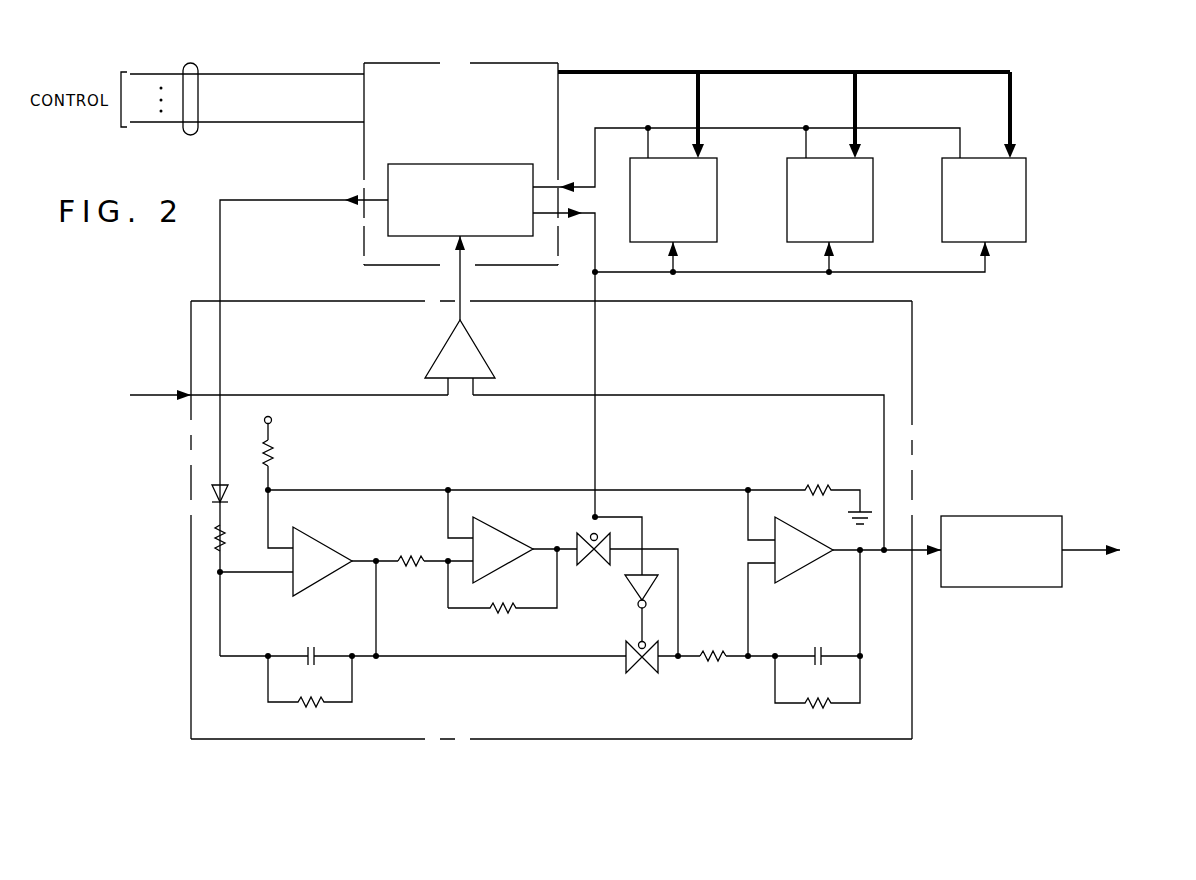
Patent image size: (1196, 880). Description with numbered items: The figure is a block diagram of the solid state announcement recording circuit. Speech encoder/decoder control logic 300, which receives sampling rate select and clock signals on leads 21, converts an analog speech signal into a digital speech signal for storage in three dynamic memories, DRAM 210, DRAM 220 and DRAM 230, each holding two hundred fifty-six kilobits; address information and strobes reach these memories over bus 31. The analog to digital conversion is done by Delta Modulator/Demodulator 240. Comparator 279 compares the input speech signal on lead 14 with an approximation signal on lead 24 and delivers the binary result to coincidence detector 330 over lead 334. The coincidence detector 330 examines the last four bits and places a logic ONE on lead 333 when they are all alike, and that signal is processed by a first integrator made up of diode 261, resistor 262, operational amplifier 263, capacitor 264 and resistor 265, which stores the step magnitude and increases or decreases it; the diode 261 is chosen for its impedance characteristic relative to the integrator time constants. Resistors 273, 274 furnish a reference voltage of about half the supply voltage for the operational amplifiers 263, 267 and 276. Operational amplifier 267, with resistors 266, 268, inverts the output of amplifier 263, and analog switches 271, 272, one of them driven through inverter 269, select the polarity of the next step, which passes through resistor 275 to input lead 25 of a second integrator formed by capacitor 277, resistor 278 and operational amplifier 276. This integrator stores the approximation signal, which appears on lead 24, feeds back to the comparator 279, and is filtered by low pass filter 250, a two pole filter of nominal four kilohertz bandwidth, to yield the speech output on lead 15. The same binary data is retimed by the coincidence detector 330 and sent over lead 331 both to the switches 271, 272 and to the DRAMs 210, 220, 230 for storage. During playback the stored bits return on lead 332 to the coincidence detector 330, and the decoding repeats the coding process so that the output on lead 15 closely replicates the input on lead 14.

The leads 21 is at (190, 63).
The speech encoder/decoder control logic 300 is at (455, 63).
The coincidence detector 330 is at (455, 164).
The lead 333 is at (220, 240).
The lead 334 is at (462, 282).
The bus 31 is at (785, 72).
The lead 332 is at (790, 128).
The lead 331 is at (960, 272).
The DRAM 210 is at (717, 160).
The DRAM 220 is at (873, 160).
The DRAM 230 is at (1026, 160).
The Delta Modulator/Demodulator 240 is at (805, 739).
The lead 14 is at (163, 393).
The lead 24 is at (758, 395).
The comparator 279 is at (473, 357).
The resistor 273 is at (289, 454).
The diode 261 is at (235, 485).
The resistor 262 is at (236, 532).
The operational amplifier 263 is at (307, 561).
The resistor 266 is at (434, 552).
The operational amplifier 267 is at (512, 549).
The resistor 268 is at (502, 581).
The capacitor 264 is at (423, 648).
The resistor 265 is at (310, 681).
The analog switch 271 is at (627, 585).
The inverter 269 is at (626, 579).
The analog switch 272 is at (662, 670).
The resistor 275 is at (734, 646).
The input lead 25 is at (748, 613).
The capacitor 277 is at (817, 648).
The resistor 278 is at (817, 629).
The resistor 274 is at (810, 494).
The operational amplifier 276 is at (844, 536).
The low pass filter 250 is at (1005, 516).
The lead 15 is at (1090, 550).